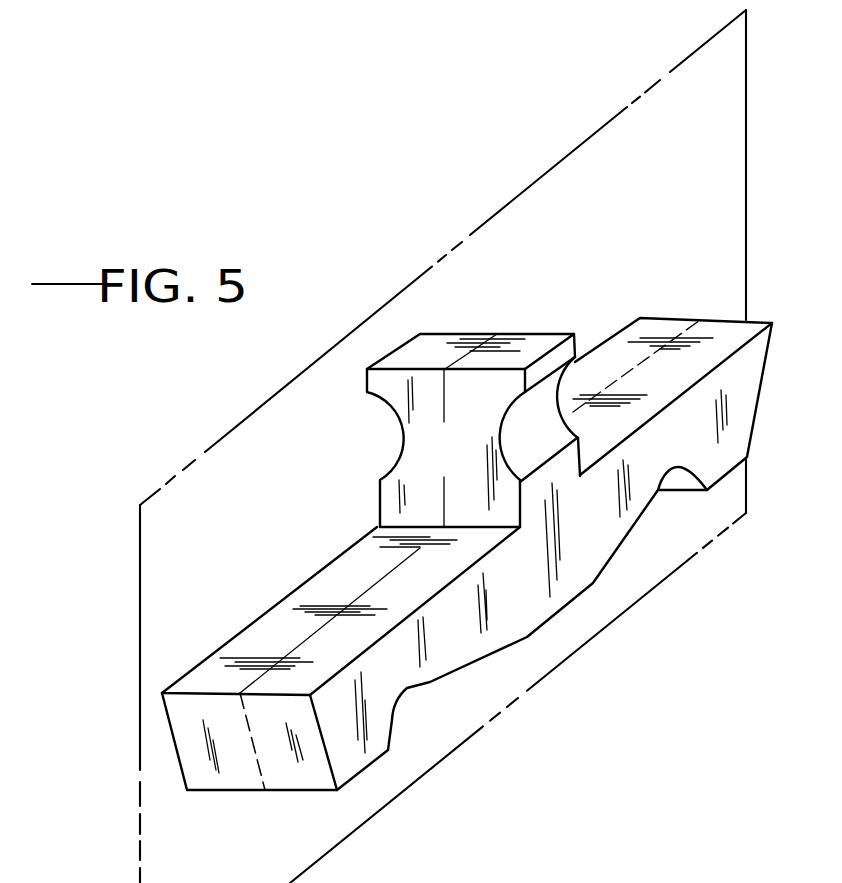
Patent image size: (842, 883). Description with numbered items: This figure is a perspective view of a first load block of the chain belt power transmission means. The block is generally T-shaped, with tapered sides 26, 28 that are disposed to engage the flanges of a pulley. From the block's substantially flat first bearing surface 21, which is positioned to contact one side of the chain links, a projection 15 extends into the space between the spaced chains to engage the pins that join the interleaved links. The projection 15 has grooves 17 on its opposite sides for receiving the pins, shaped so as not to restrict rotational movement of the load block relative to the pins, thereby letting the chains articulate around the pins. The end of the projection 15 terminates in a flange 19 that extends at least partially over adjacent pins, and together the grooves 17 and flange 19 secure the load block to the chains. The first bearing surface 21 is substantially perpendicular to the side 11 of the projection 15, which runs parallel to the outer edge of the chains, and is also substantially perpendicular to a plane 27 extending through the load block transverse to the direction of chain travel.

The side of the projection 11 is at (410, 493).
The projection 15 is at (466, 467).
The grooves 17 is at (393, 423).
The flange 19 is at (433, 348).
The first bearing surface 21 is at (327, 600).
The tapered side 26 is at (233, 766).
The plane 27 is at (590, 136).
The tapered side 28 is at (762, 395).